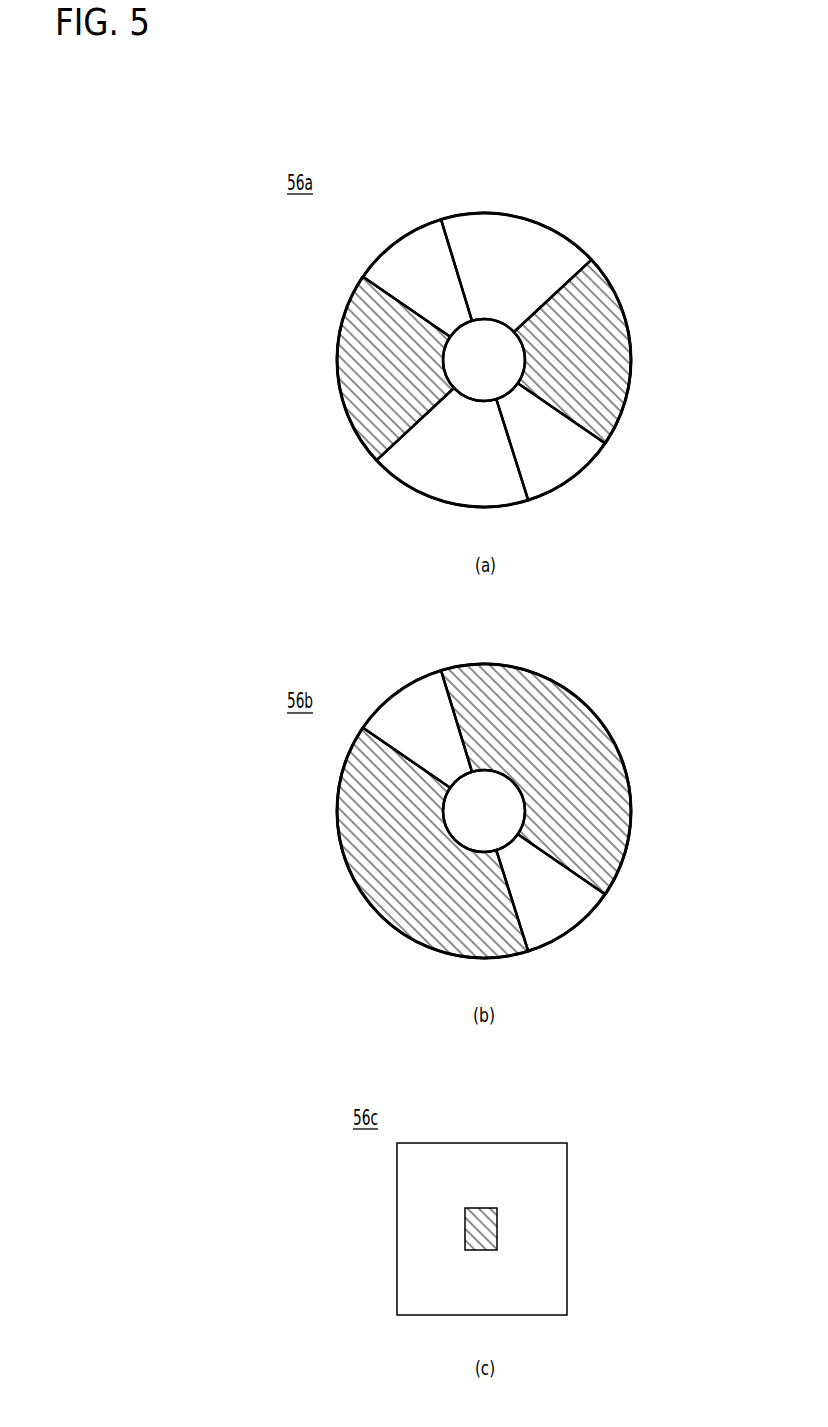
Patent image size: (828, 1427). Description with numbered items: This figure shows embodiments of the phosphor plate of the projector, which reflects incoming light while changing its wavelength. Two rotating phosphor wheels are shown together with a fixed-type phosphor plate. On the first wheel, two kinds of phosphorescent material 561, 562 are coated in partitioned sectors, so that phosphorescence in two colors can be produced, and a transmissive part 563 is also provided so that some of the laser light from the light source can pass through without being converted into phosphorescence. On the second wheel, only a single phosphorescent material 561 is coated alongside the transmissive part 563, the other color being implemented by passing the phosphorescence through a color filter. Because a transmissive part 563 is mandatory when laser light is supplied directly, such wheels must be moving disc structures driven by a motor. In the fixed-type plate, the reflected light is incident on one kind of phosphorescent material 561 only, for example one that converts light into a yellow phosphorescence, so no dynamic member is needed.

The phosphorescent material 561 is at (607, 355).
The phosphorescent material 562 is at (543, 242).
The transmissive part 563 is at (408, 260).